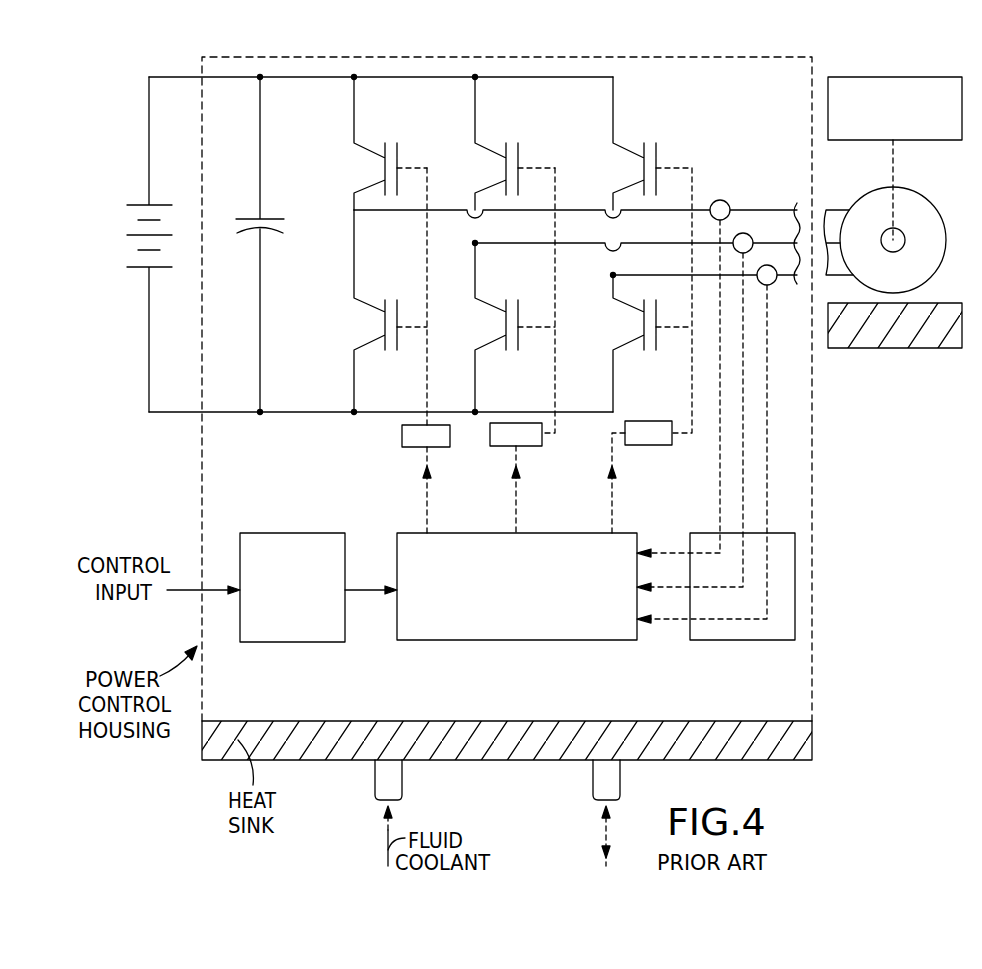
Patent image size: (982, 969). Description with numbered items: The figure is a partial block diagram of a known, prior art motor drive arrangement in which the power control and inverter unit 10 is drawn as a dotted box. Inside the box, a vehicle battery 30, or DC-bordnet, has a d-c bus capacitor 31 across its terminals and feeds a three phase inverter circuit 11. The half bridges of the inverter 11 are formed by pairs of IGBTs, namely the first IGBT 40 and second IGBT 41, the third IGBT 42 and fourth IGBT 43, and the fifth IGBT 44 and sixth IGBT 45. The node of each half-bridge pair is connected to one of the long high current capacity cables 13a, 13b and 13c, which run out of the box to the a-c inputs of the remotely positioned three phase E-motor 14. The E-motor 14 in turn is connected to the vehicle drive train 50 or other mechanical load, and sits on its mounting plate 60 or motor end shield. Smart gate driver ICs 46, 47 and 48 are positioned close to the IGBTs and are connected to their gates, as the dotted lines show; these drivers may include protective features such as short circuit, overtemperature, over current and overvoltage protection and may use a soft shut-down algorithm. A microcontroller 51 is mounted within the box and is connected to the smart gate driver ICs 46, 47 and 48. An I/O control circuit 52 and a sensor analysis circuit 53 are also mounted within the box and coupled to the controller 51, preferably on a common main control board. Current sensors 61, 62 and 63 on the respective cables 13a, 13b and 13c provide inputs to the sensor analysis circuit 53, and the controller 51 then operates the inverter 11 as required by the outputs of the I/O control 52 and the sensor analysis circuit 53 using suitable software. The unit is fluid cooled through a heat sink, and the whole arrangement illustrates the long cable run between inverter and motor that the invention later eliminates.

The power control and inverter unit 10 is at (410, 56).
The three phase inverter circuit 11 is at (520, 106).
The high current capacity cable 13a is at (396, 212).
The high current capacity cable 13b is at (526, 245).
The high current capacity cable 13c is at (620, 275).
The three phase E-motor 14 is at (866, 200).
The vehicle battery 30 is at (132, 250).
The d-c bus capacitor 31 is at (266, 217).
The IGBT 40 is at (372, 150).
The IGBT 41 is at (368, 340).
The IGBT 42 is at (493, 150).
The IGBT 43 is at (489, 340).
The IGBT 44 is at (633, 150).
The IGBT 45 is at (627, 340).
The smart gate driver IC 46 is at (437, 447).
The smart gate driver IC 47 is at (540, 446).
The smart gate driver IC 48 is at (650, 445).
The vehicle drive train 50 is at (853, 77).
The microcontroller 51 is at (453, 640).
The I/O control circuit 52 is at (272, 642).
The sensor analysis circuit 53 is at (698, 643).
The mounting plate 60 is at (866, 349).
The current sensor 61 is at (749, 235).
The current sensor 62 is at (772, 285).
The current sensor 63 is at (727, 202).